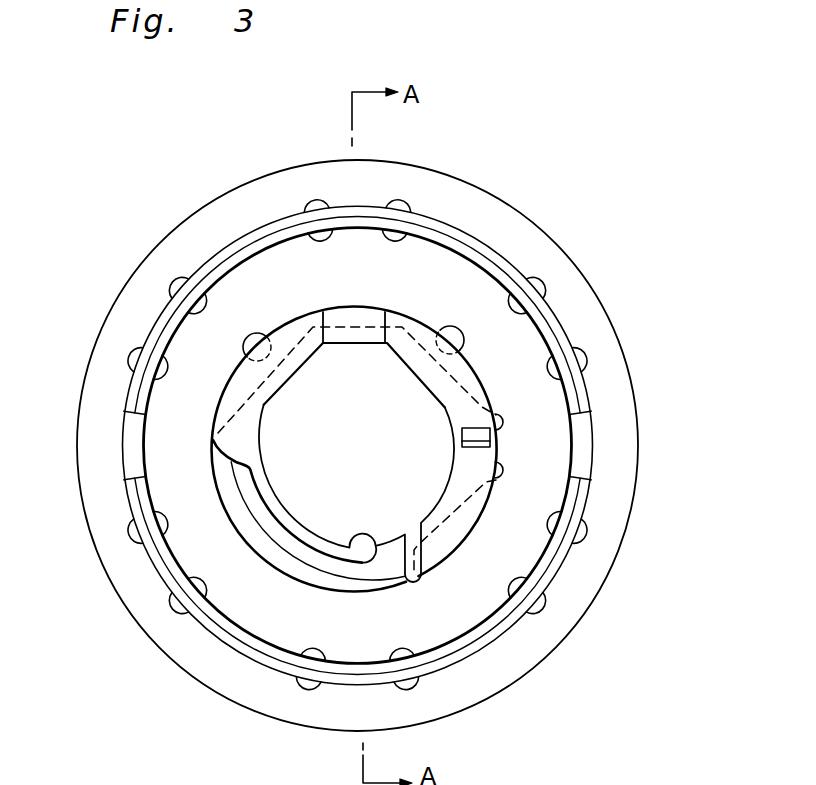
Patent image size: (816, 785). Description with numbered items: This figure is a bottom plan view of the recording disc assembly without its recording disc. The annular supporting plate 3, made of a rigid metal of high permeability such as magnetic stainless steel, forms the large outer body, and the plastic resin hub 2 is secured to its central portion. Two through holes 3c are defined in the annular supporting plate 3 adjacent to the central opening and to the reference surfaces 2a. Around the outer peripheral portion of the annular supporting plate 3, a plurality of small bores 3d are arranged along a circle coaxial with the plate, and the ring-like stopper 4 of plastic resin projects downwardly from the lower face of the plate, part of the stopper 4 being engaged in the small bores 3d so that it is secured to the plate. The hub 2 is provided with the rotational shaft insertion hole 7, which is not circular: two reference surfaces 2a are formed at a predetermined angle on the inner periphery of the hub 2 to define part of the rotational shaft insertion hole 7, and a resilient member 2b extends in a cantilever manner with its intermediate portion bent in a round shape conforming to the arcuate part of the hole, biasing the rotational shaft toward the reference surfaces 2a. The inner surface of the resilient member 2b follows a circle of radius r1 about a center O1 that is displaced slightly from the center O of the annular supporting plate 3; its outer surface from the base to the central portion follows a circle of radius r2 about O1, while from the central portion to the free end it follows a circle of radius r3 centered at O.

The hub 2 is at (472, 376).
The reference surfaces 2a is at (307, 364).
The resilient member 2b is at (366, 538).
The annular supporting plate 3 is at (528, 232).
The through holes 3c is at (452, 330).
The small bores 3d is at (585, 356).
The stopper 4 is at (498, 633).
The rotational shaft insertion hole 7 is at (430, 484).
The radius r1 is at (372, 434).
The radius r2 is at (369, 437).
The radius r3 is at (357, 447).
The center O is at (367, 463).
The center O1 is at (390, 439).